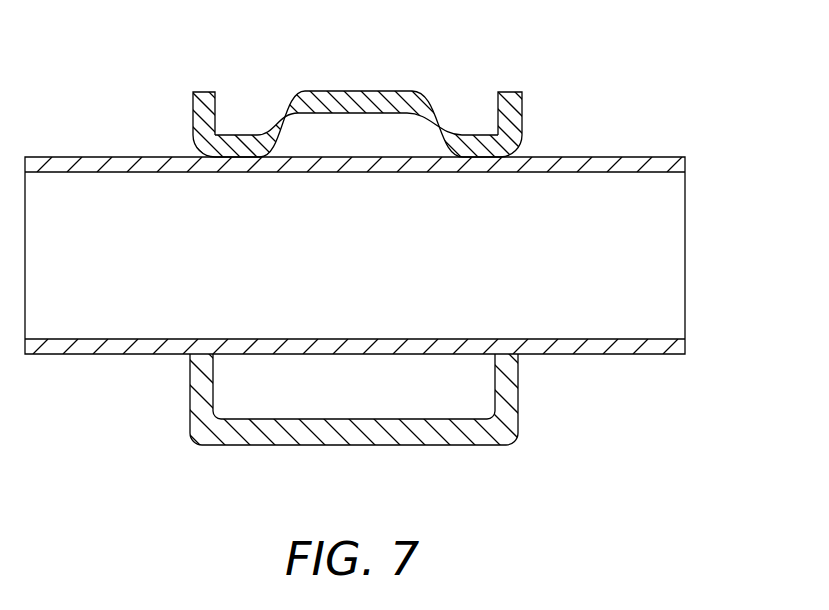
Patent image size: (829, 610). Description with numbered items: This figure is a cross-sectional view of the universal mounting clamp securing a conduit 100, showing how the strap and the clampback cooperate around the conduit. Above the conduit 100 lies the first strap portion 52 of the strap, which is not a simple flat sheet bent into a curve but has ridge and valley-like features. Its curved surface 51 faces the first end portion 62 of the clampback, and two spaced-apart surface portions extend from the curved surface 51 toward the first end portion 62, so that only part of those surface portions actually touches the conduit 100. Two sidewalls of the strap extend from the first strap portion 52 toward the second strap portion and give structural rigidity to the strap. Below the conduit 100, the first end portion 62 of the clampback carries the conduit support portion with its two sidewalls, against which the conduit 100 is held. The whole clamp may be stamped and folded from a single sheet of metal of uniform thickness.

The conduit 100 is at (686, 230).
The first strap portion 52 is at (352, 91).
The curved surface 51 is at (362, 113).
The first end portion 62 is at (405, 428).